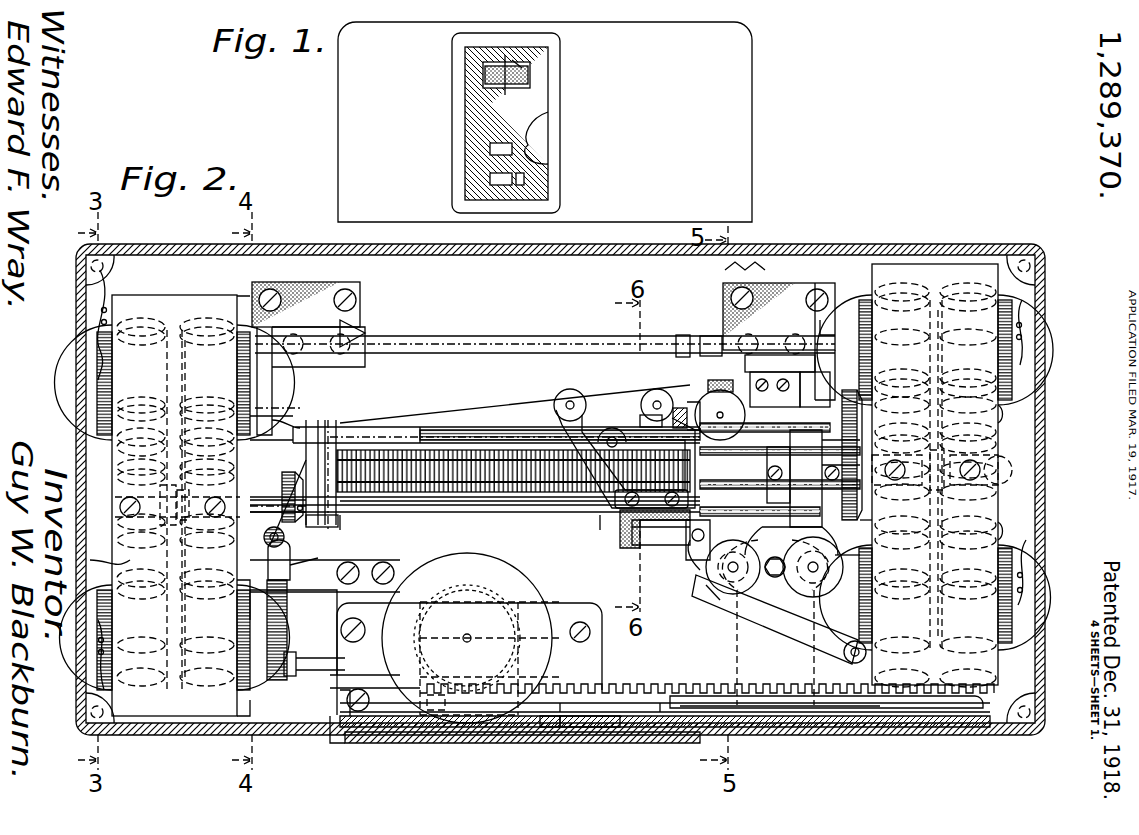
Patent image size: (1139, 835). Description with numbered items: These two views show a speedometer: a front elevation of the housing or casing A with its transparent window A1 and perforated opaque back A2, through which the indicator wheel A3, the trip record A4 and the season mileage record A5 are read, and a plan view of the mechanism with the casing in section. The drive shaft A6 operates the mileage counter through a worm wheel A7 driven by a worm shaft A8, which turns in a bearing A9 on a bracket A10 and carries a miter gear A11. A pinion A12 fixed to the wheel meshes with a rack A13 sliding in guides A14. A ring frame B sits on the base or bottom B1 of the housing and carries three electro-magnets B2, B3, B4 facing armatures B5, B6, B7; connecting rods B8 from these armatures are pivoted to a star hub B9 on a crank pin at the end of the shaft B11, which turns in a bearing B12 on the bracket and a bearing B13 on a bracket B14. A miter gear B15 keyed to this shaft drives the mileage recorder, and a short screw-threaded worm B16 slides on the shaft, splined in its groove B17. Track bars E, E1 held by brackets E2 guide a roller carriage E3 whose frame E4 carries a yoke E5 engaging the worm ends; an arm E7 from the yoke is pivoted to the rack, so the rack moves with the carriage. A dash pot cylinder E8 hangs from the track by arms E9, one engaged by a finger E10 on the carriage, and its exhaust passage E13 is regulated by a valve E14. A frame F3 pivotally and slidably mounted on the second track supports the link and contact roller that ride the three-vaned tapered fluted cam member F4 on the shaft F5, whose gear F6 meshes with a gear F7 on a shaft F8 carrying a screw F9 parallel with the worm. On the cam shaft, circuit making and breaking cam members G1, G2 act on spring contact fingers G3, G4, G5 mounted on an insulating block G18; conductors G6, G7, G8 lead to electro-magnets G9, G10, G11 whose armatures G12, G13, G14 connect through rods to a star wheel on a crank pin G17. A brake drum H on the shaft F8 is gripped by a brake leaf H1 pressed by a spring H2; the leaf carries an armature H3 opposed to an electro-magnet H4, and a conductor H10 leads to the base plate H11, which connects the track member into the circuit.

In FIG. 1, the housing or casing A is at (660, 82).
In FIG. 2, the housing or casing A is at (78, 318).
In FIG. 1, the transparent window A1 is at (470, 95).
In FIG. 2, the transparent window A1 is at (495, 745).
In FIG. 1, the opaque back A2 is at (540, 142).
In FIG. 2, the opaque back A2 is at (536, 730).
In FIG. 1, the indicator wheel A3 is at (510, 62).
In FIG. 2, the indicator wheel A3 is at (462, 722).
In FIG. 1, the trip record A4 is at (465, 145).
In FIG. 1, the season mileage record A5 is at (490, 180).
In FIG. 2, the drive shaft A6 is at (286, 714).
In FIG. 2, the worm wheel A7 is at (286, 656).
In FIG. 2, the worm shaft A8 is at (282, 630).
In FIG. 2, the bearing A9 is at (284, 598).
In FIG. 2, the bracket A10 is at (392, 548).
In FIG. 2, the miter gear A11 is at (238, 600).
In FIG. 2, the pinion A12 is at (482, 598).
In FIG. 2, the rack A13 is at (626, 716).
In FIG. 2, the guides A14 is at (690, 682).
In FIG. 2, the ring frame B is at (160, 305).
In FIG. 2, the base or bottom B1 is at (361, 492).
In FIG. 2, the electro-magnet B2 is at (112, 565).
In FIG. 2, the electro-magnet B3 is at (100, 372).
In FIG. 2, the electro-magnet B4 is at (112, 478).
In FIG. 2, the armature B5 is at (118, 533).
In FIG. 2, the armature B6 is at (108, 428).
In FIG. 2, the armature B7 is at (112, 500).
In FIG. 2, the connecting rods B8 is at (186, 458).
In FIG. 2, the star hub B9 is at (170, 540).
In FIG. 2, the shaft B11 is at (470, 515).
In FIG. 2, the bearing B12 is at (336, 528).
In FIG. 2, the bearing B13 is at (820, 598).
In FIG. 2, the bracket B14 is at (695, 565).
In FIG. 2, the miter gear B15 is at (284, 484).
In FIG. 2, the screw-threaded member B16 is at (650, 566).
In FIG. 2, the groove B17 is at (500, 515).
In FIG. 2, the track bar E is at (480, 425).
In FIG. 2, the track bar E1 is at (481, 340).
In FIG. 2, the brackets E2 is at (272, 388).
In FIG. 2, the roller carriage E3 is at (596, 420).
In FIG. 2, the frame E4 is at (600, 516).
In FIG. 2, the yoke E5 is at (628, 560).
In FIG. 2, the arm E7 is at (720, 600).
In FIG. 2, the dash pot cylinder E8 is at (777, 453).
In FIG. 2, the arms E9 is at (650, 400).
In FIG. 2, the finger E10 is at (664, 400).
In FIG. 2, the exhaust passage E13 is at (705, 378).
In FIG. 2, the valve E14 is at (722, 356).
In FIG. 2, the frame F3 is at (680, 345).
In FIG. 2, the cam member F4 is at (533, 425).
In FIG. 2, the shaft F5 is at (382, 430).
In FIG. 2, the gear F6 is at (860, 395).
In FIG. 2, the gear F7 is at (870, 522).
In FIG. 2, the shaft F8 is at (308, 470).
In FIG. 2, the screw F9 is at (545, 512).
In FIG. 2, the circuit making and breaking cam member G1 is at (758, 478).
In FIG. 2, the circuit making and breaking cam member G2 is at (790, 432).
In FIG. 2, the spring contact finger G3 is at (825, 385).
In FIG. 2, the spring contact finger G4 is at (815, 402).
In FIG. 2, the spring contact finger G5 is at (825, 420).
In FIG. 2, the conductor G6 is at (765, 400).
In FIG. 2, the conductor G7 is at (790, 400).
In FIG. 2, the conductor G8 is at (836, 282).
In FIG. 2, the electro-magnet G9 is at (1012, 360).
In FIG. 2, the electro-magnet G10 is at (1012, 470).
In FIG. 2, the electro-magnet G11 is at (1012, 575).
In FIG. 2, the armature G12 is at (1008, 415).
In FIG. 2, the armature G13 is at (1000, 487).
In FIG. 2, the armature G14 is at (1012, 530).
In FIG. 2, the crank pin G17 is at (965, 478).
In FIG. 2, the insulating block G18 is at (770, 285).
In FIG. 2, the brake drum H is at (712, 592).
In FIG. 2, the brake leaf H1 is at (762, 560).
In FIG. 2, the spring H2 is at (748, 662).
In FIG. 2, the armature H3 is at (845, 572).
In FIG. 2, the electro-magnet H4 is at (848, 558).
In FIG. 2, the conductor H10 is at (372, 300).
In FIG. 2, the base plate H11 is at (370, 338).